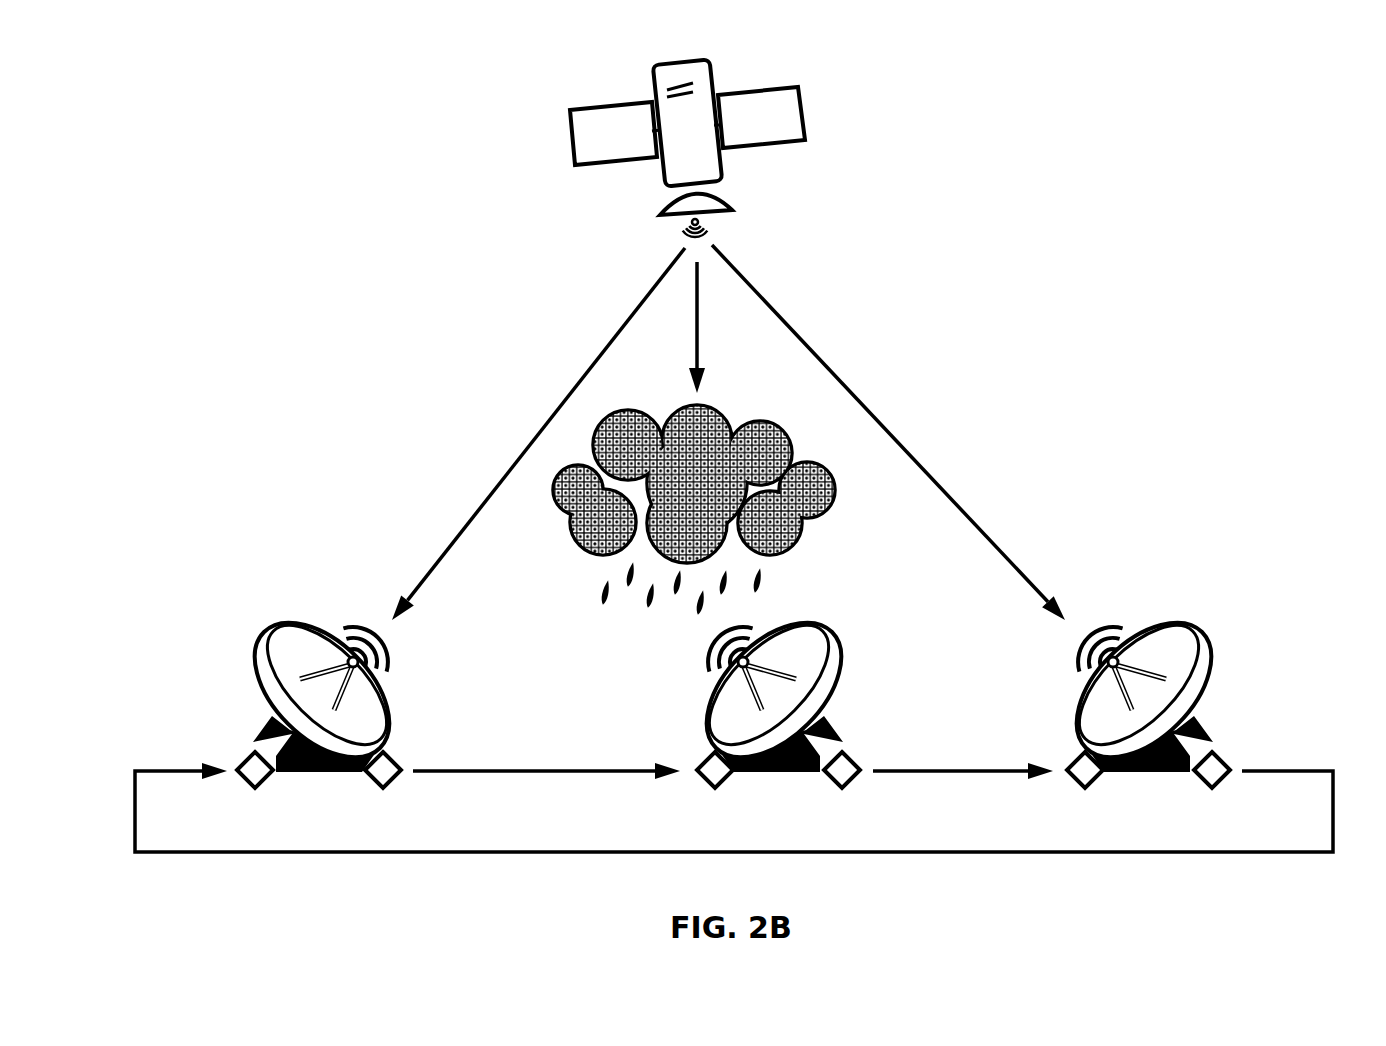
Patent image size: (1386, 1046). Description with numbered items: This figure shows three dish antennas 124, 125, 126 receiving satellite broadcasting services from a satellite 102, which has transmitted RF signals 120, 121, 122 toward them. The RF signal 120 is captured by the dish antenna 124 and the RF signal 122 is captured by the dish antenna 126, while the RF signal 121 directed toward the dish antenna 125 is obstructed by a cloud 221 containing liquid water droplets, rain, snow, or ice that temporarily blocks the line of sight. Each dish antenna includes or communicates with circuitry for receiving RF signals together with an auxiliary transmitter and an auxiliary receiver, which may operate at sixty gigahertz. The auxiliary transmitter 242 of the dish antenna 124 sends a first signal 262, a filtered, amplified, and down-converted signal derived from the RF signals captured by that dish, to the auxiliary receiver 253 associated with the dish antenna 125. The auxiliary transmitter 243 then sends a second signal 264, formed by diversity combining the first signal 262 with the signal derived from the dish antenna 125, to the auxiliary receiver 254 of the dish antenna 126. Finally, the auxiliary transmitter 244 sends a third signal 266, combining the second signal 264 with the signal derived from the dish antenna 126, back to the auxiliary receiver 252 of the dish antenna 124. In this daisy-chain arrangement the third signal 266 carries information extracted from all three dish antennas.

The satellite 102 is at (768, 147).
The RF signal 120 is at (607, 348).
The RF signal 121 is at (697, 350).
The RF signal 122 is at (802, 338).
The cloud 221 is at (694, 510).
The dish antenna 124 is at (380, 717).
The dish antenna 125 is at (716, 717).
The dish antenna 126 is at (1086, 717).
The auxiliary transmitter 242 is at (383, 773).
The auxiliary transmitter 243 is at (843, 773).
The auxiliary transmitter 244 is at (1213, 773).
The auxiliary receiver 252 is at (257, 772).
The auxiliary receiver 253 is at (717, 772).
The auxiliary receiver 254 is at (1087, 772).
The first signal 262 is at (518, 770).
The second signal 264 is at (905, 770).
The third signal 266 is at (1272, 770).